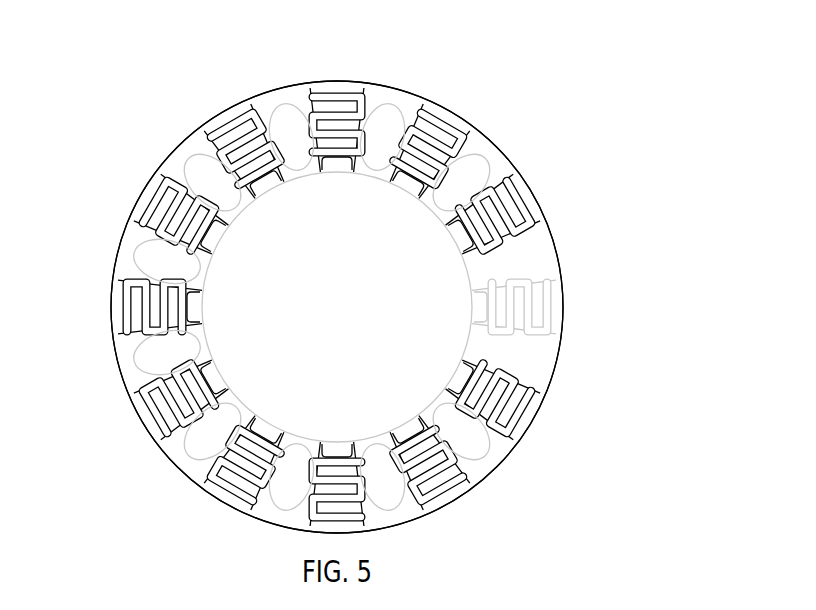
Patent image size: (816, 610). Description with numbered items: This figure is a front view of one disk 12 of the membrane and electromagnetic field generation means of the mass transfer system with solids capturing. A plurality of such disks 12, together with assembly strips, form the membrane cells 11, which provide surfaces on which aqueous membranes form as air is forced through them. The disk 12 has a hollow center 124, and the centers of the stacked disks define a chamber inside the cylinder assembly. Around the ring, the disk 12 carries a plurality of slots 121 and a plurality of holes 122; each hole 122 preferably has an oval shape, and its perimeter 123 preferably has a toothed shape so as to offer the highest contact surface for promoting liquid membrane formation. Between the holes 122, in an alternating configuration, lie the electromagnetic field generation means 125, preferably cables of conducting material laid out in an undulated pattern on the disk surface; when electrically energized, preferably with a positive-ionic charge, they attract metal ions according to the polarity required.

The membrane cells 11 is at (408, 83).
The disk 12 is at (523, 116).
The slots 121 is at (470, 232).
The holes 122 is at (185, 165).
The perimeter 123 is at (122, 248).
The hollow center 124 is at (464, 352).
The electromagnetic field generation means 125 is at (535, 410).